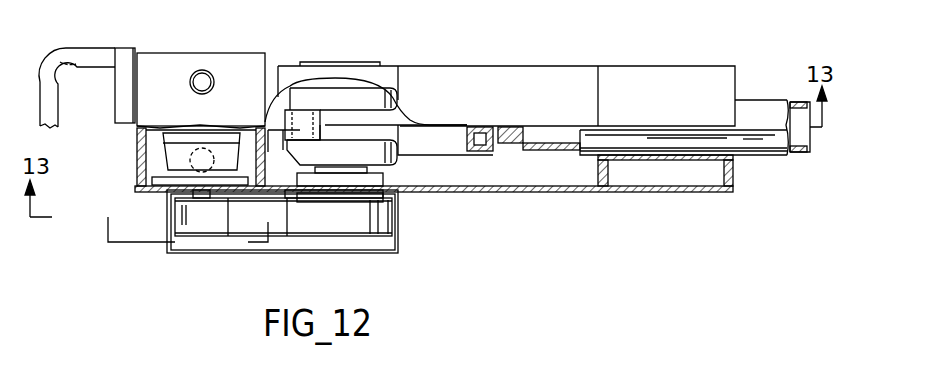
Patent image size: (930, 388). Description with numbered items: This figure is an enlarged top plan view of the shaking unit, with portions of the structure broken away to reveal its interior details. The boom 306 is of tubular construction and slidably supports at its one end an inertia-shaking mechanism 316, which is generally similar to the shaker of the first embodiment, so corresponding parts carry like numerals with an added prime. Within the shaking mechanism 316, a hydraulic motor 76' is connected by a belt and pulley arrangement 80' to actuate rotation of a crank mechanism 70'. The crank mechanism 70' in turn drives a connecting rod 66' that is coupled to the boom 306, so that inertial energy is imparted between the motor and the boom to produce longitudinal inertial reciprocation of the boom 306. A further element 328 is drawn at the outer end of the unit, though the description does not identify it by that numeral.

The elbow pipe 328 is at (80, 50).
The inertia-shaking mechanism 316 is at (422, 63).
The connecting rod 66' is at (359, 120).
The crank mechanism 70' is at (371, 180).
The hydraulic motor 76' is at (163, 157).
The boom 306 is at (773, 157).
The belt and pulley arrangement 80' is at (253, 238).